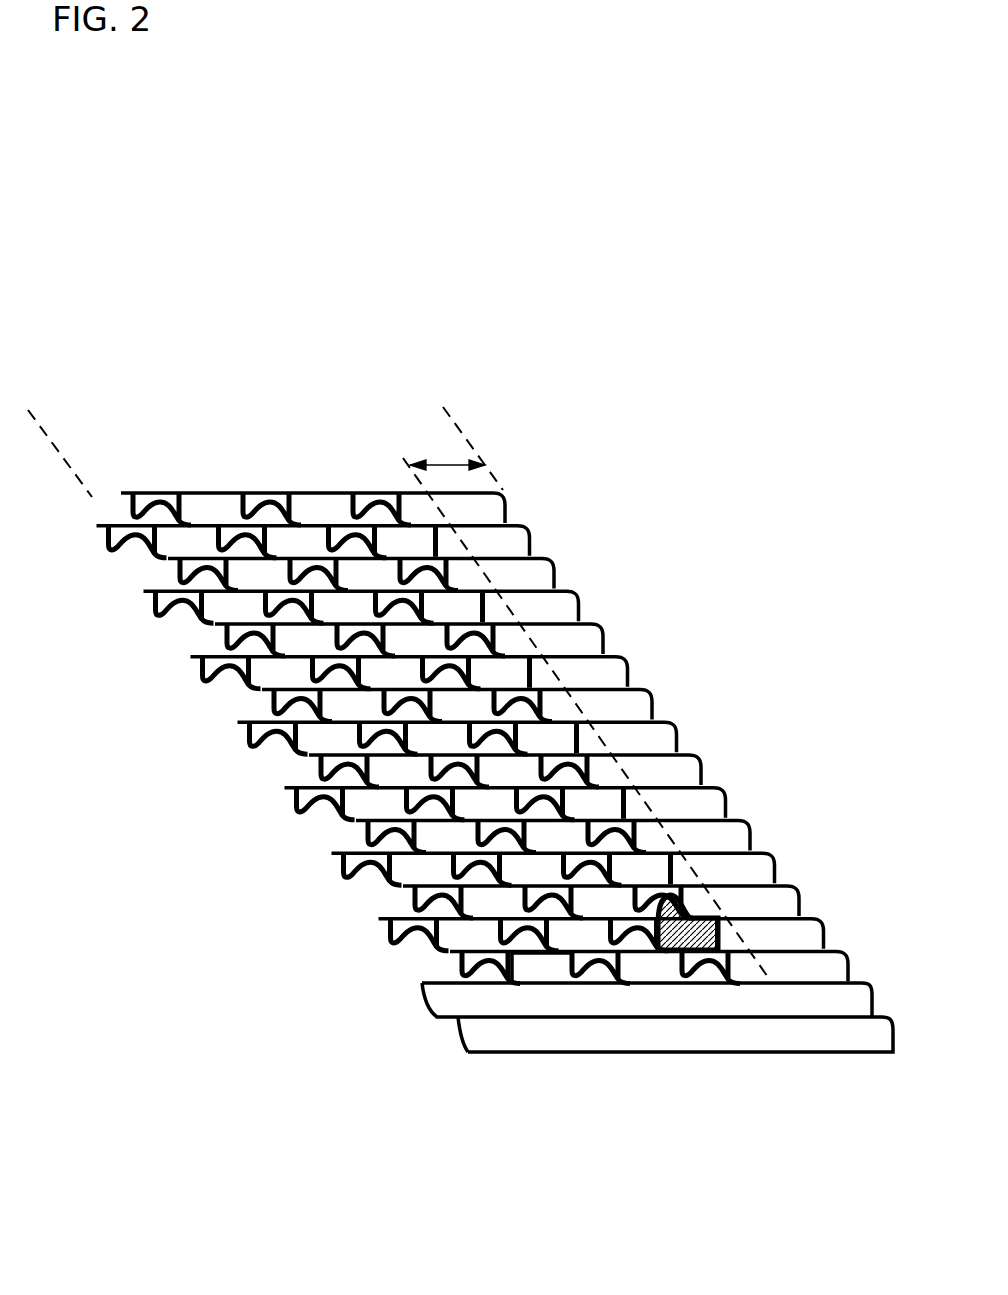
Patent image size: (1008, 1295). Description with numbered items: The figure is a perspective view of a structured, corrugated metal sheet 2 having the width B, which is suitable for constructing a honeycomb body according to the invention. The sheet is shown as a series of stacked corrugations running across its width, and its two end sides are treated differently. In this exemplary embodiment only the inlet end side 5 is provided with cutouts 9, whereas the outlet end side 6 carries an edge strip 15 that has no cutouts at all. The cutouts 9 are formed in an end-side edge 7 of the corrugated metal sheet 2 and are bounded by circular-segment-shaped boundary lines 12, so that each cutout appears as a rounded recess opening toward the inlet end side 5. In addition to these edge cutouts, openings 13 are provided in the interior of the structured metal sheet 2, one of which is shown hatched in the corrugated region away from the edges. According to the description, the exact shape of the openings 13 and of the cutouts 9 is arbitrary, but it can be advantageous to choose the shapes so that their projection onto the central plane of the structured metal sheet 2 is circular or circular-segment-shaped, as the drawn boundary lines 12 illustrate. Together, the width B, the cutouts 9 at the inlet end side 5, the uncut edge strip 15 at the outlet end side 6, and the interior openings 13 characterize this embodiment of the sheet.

The corrugated metal sheet 2 is at (790, 1035).
The inlet end side 5 is at (238, 733).
The outlet end side 6 is at (652, 663).
The end-side edge 7 is at (203, 668).
The cutouts 9 is at (321, 832).
The circular-segment-shaped boundary lines 12 is at (358, 905).
The openings 13 is at (680, 886).
The edge strip 15 is at (439, 462).
The width B is at (457, 427).